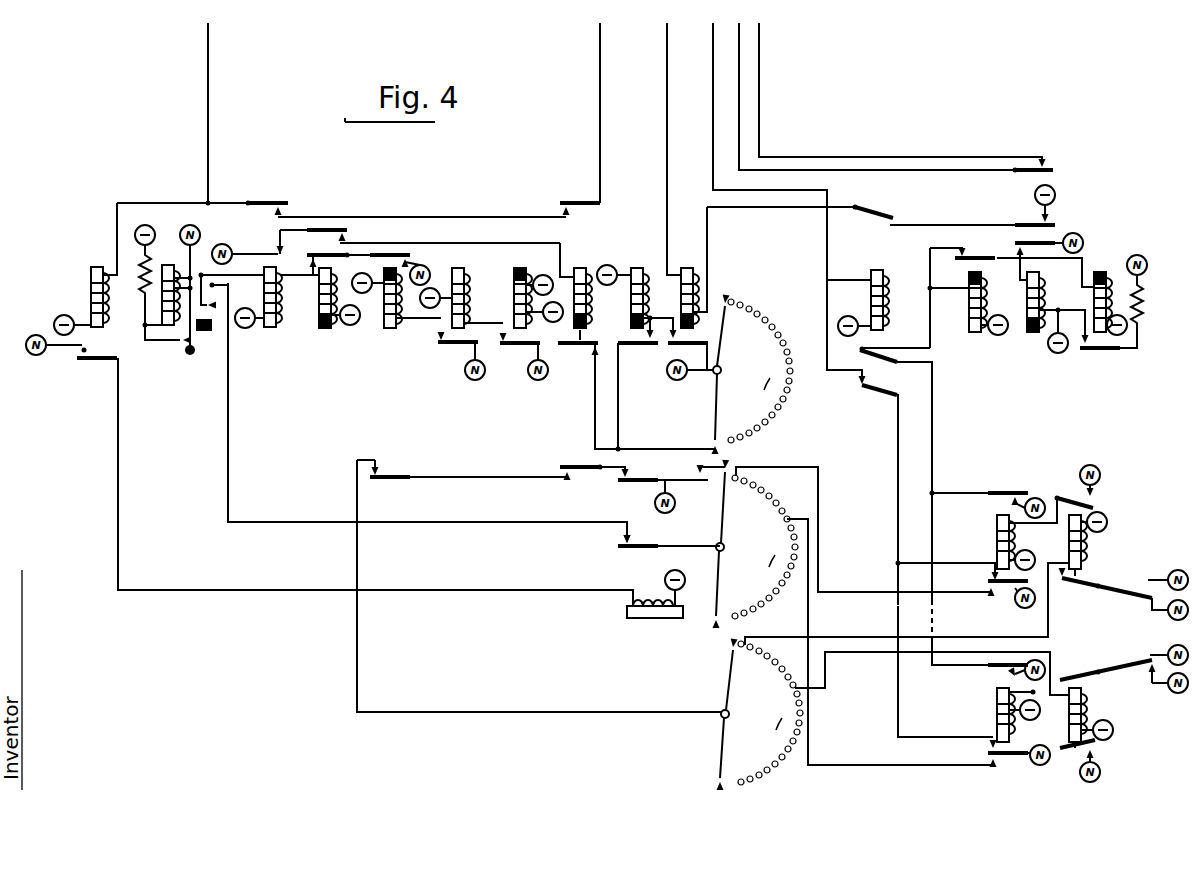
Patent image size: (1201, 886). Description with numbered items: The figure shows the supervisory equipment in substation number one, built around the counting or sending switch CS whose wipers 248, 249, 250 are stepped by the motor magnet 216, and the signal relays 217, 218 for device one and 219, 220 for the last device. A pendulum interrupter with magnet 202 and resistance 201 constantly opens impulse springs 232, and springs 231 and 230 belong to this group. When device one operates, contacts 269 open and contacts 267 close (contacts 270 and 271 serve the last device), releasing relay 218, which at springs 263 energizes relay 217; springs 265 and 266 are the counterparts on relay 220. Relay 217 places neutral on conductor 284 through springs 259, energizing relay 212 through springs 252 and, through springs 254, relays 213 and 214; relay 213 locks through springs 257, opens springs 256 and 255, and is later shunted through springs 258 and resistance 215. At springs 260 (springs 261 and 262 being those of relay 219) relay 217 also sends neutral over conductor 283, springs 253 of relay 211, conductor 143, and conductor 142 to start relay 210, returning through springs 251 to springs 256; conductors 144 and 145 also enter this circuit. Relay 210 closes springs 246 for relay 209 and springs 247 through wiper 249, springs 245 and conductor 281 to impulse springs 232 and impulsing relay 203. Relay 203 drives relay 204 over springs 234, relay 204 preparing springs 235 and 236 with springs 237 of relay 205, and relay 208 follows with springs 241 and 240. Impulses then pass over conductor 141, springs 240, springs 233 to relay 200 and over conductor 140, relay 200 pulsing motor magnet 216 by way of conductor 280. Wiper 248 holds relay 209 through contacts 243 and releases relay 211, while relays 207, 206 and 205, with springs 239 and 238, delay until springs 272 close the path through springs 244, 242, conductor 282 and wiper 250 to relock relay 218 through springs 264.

The conductor 140 is at (208, 53).
The conductor 141 is at (600, 75).
The conductor 142 is at (667, 40).
The conductor 143 is at (713, 90).
The conductor 144 is at (739, 65).
The conductor 145 is at (759, 40).
The relay 200 is at (103, 256).
The resistance 201 is at (138, 297).
The interrupter magnet 202 is at (168, 287).
The impulsing relay 203 is at (276, 330).
The relay 204 is at (320, 332).
The slow-to-pull-up relay 205 is at (396, 314).
The slow-to-pull-up relay 206 is at (470, 266).
The slow-to-pull-up relay 207 is at (530, 287).
The relay 208 is at (578, 291).
The relay 209 is at (637, 292).
The start relay 210 is at (690, 266).
The relay 211 is at (883, 270).
The relay 212 is at (975, 335).
The relay 213 is at (1040, 285).
The relay 214 is at (1106, 272).
The resistance 215 is at (1156, 292).
The motor magnet 216 is at (668, 622).
The relay 217 is at (997, 524).
The relay 218 is at (1088, 561).
The relay 219 is at (995, 727).
The relay 220 is at (1083, 715).
The springs 230 is at (87, 363).
The springs 231 is at (179, 358).
The impulse springs 232 is at (205, 335).
The springs 233 is at (272, 200).
The springs 234 is at (259, 245).
The springs 235 is at (345, 235).
The springs 236 is at (325, 254).
The springs 237 is at (400, 258).
The springs 238 is at (455, 351).
The springs 239 is at (518, 361).
The springs 240 is at (580, 210).
The springs 241 is at (582, 360).
The springs 242 is at (562, 465).
The contacts 243 is at (666, 397).
The springs 244 is at (622, 484).
The springs 245 is at (622, 554).
The springs 246 is at (662, 370).
The springs 247 is at (708, 492).
The wiper 248 is at (722, 360).
The wiper 249 is at (724, 538).
The wiper 250 is at (729, 698).
The springs 251 is at (876, 212).
The springs 252 is at (880, 368).
The springs 253 is at (864, 392).
The springs 254 is at (1010, 244).
The springs 255 is at (1028, 178).
The springs 256 is at (1026, 214).
The springs 257 is at (1050, 240).
The springs 258 is at (1100, 356).
The springs 259 is at (1006, 492).
The springs 260 is at (1002, 588).
The springs 261 is at (989, 678).
The springs 262 is at (1003, 756).
The springs 263 is at (1092, 504).
The springs 264 is at (1072, 586).
The springs 265 is at (1088, 668).
The springs 266 is at (1072, 754).
The contacts 267 is at (1156, 569).
The contacts 269 is at (1148, 615).
The contacts 270 is at (1148, 656).
The contacts 271 is at (1148, 690).
The springs 272 is at (386, 472).
The conductor 280 is at (118, 465).
The conductor 281 is at (228, 470).
The conductor 282 is at (357, 656).
The conductor 283 is at (898, 468).
The conductor 284 is at (932, 450).